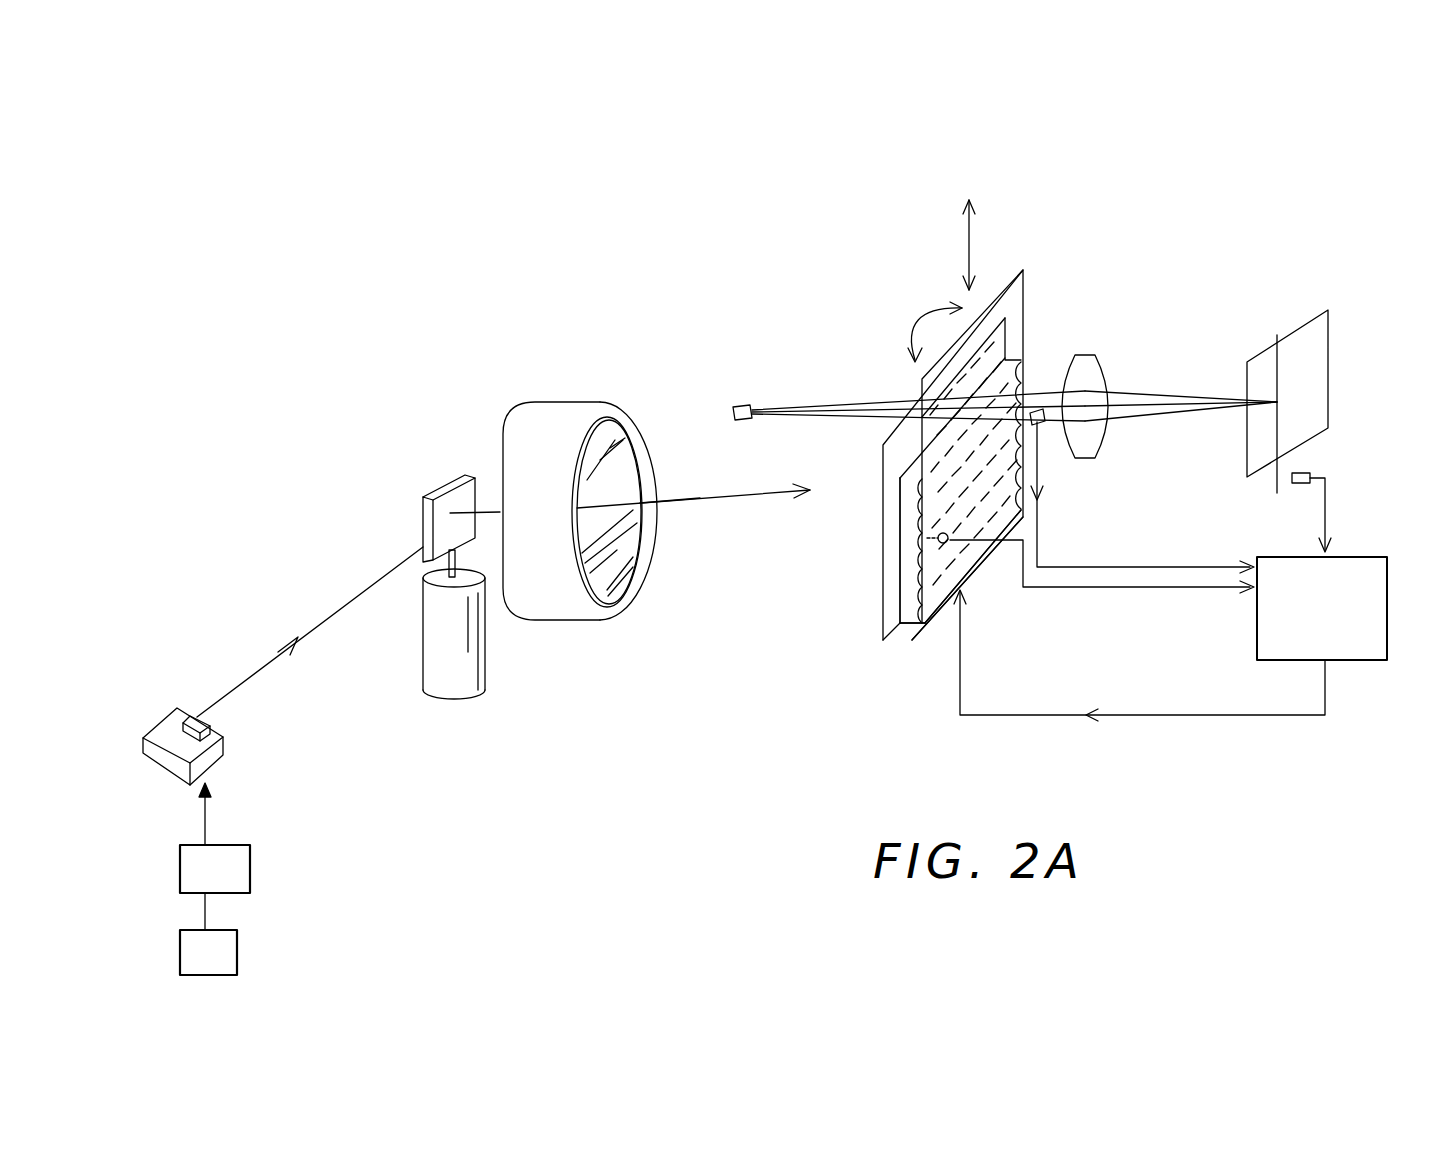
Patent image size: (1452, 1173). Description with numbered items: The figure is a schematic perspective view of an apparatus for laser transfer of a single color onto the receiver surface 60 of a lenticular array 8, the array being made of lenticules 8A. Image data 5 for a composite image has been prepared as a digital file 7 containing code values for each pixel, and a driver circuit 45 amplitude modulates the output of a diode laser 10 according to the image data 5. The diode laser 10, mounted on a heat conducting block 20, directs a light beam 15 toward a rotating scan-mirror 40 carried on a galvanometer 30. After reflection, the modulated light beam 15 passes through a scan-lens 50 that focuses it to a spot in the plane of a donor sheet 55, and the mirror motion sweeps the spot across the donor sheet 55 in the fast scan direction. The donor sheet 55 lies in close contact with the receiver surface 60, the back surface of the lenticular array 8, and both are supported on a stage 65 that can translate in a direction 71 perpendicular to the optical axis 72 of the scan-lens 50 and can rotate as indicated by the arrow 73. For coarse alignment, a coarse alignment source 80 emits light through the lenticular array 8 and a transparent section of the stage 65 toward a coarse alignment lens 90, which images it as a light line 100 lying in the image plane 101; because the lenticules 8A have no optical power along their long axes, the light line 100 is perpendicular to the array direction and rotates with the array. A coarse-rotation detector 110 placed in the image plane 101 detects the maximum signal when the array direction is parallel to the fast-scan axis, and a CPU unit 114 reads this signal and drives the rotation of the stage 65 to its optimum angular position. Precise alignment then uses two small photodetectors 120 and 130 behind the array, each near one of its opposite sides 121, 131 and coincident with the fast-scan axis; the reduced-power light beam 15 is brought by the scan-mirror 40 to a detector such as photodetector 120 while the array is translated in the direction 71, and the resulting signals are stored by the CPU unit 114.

The image data 5 is at (208, 934).
The digital file 7 is at (243, 956).
The lenticular array 8 is at (893, 632).
The lenticules 8A is at (912, 642).
The diode laser 10 is at (195, 716).
The light beam 15 is at (322, 608).
The heat conducting block 20 is at (202, 766).
The galvanometer 30 is at (453, 680).
The scan-mirror 40 is at (430, 497).
The driver circuit 45 is at (215, 838).
The scan-lens 50 is at (560, 420).
The donor sheet 55 is at (873, 614).
The receiver surface 60 is at (904, 553).
The stage 65 is at (933, 632).
The translation direction 71 is at (988, 243).
The optical axis 72 is at (702, 508).
The rotation arrow 73 is at (927, 320).
The coarse alignment source 80 is at (743, 405).
The coarse alignment lens 90 is at (1090, 372).
The light line 100 is at (1278, 335).
The image plane 101 is at (1330, 320).
The coarse-rotation detector 110 is at (1298, 484).
The CPU unit 114 is at (1388, 655).
The photodetector 120 is at (948, 543).
The side of lenticular array 121 is at (900, 578).
The photodetector 130 is at (1042, 410).
The side of lenticular array 131 is at (1027, 392).